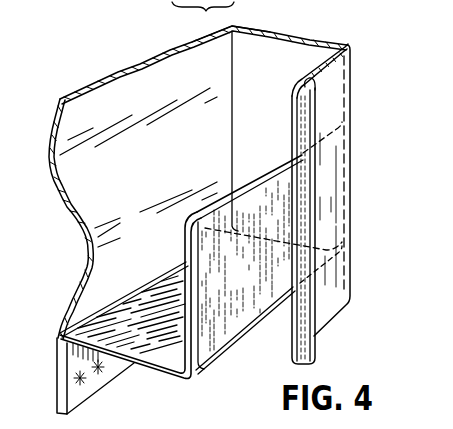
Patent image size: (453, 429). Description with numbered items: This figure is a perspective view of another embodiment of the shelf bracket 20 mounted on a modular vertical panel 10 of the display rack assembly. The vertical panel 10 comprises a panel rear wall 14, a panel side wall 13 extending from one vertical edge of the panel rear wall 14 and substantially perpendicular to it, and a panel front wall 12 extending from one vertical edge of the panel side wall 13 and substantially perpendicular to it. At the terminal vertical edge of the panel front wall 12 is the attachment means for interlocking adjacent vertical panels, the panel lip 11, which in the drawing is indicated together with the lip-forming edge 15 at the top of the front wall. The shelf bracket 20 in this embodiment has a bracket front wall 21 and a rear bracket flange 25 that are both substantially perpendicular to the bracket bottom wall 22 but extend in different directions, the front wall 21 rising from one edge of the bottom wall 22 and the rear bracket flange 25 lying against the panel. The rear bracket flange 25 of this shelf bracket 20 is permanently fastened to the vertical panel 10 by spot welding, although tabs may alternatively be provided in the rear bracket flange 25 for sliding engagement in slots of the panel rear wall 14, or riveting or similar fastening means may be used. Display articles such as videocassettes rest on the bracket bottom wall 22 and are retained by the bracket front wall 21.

The modular vertical panel 10 is at (176, 72).
The panel lip 11 is at (316, 105).
The panel front wall 12 is at (332, 112).
The panel side wall 13 is at (290, 50).
The panel rear wall 14 is at (120, 90).
The inner lip 15 is at (314, 79).
The shelf bracket 20 is at (208, 333).
The bracket front wall 21 is at (253, 310).
The bracket bottom wall 22 is at (176, 361).
The rear bracket flange 25 is at (90, 388).